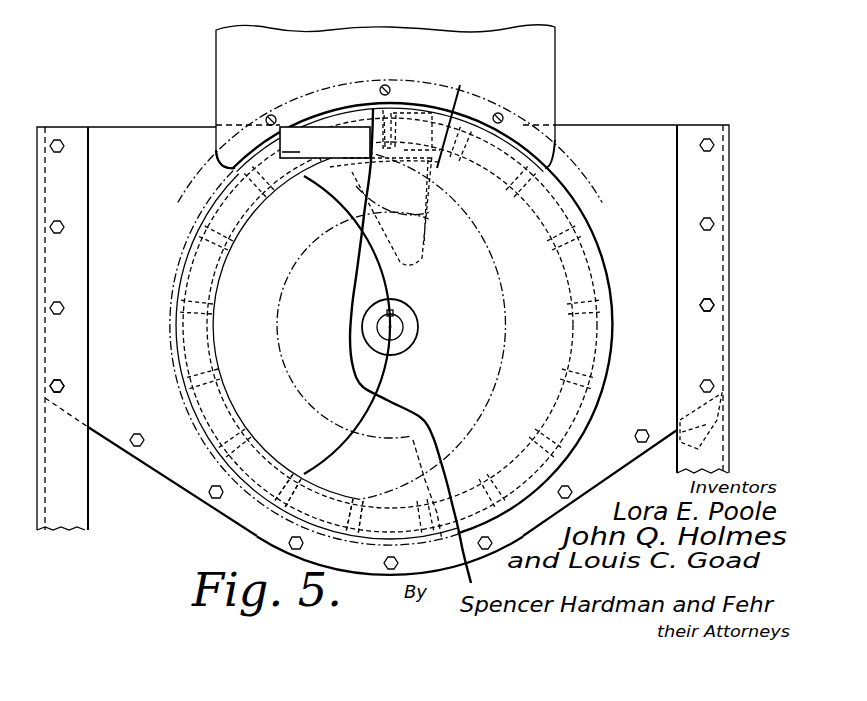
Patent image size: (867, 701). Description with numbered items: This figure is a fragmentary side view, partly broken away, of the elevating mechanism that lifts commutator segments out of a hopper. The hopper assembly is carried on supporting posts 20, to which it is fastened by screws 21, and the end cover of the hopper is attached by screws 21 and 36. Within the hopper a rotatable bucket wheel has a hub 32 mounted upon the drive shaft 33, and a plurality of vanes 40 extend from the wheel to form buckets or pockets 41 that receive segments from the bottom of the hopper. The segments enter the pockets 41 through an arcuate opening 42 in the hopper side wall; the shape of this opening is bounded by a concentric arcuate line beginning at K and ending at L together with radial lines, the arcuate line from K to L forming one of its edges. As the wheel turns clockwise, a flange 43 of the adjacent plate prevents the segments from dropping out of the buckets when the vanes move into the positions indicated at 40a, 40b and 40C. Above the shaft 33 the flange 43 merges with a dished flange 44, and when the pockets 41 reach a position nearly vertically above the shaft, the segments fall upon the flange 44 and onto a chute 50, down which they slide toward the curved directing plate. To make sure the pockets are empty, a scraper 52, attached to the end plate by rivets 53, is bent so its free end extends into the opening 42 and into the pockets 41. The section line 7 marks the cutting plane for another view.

The section line 7- 7 is at (391, 100).
The supporting posts 20 is at (50, 480).
The screws 21 is at (61, 383).
The hub 32 is at (410, 323).
The drive shaft 33 is at (397, 335).
The screws 36 is at (137, 448).
The vanes 40 is at (360, 520).
The vane position 40a is at (213, 215).
The vane position 40b is at (257, 150).
The vane position 40C is at (323, 140).
The buckets or pockets 41 is at (300, 503).
The arcuate opening 42 is at (281, 331).
The flange 43 is at (231, 264).
The dished flange 44 is at (404, 166).
The chute 50 is at (424, 236).
The scraper 52 is at (356, 127).
The rivets 53 is at (290, 152).
The boundary point of opening K is at (418, 351).
The boundary point of opening L is at (452, 117).